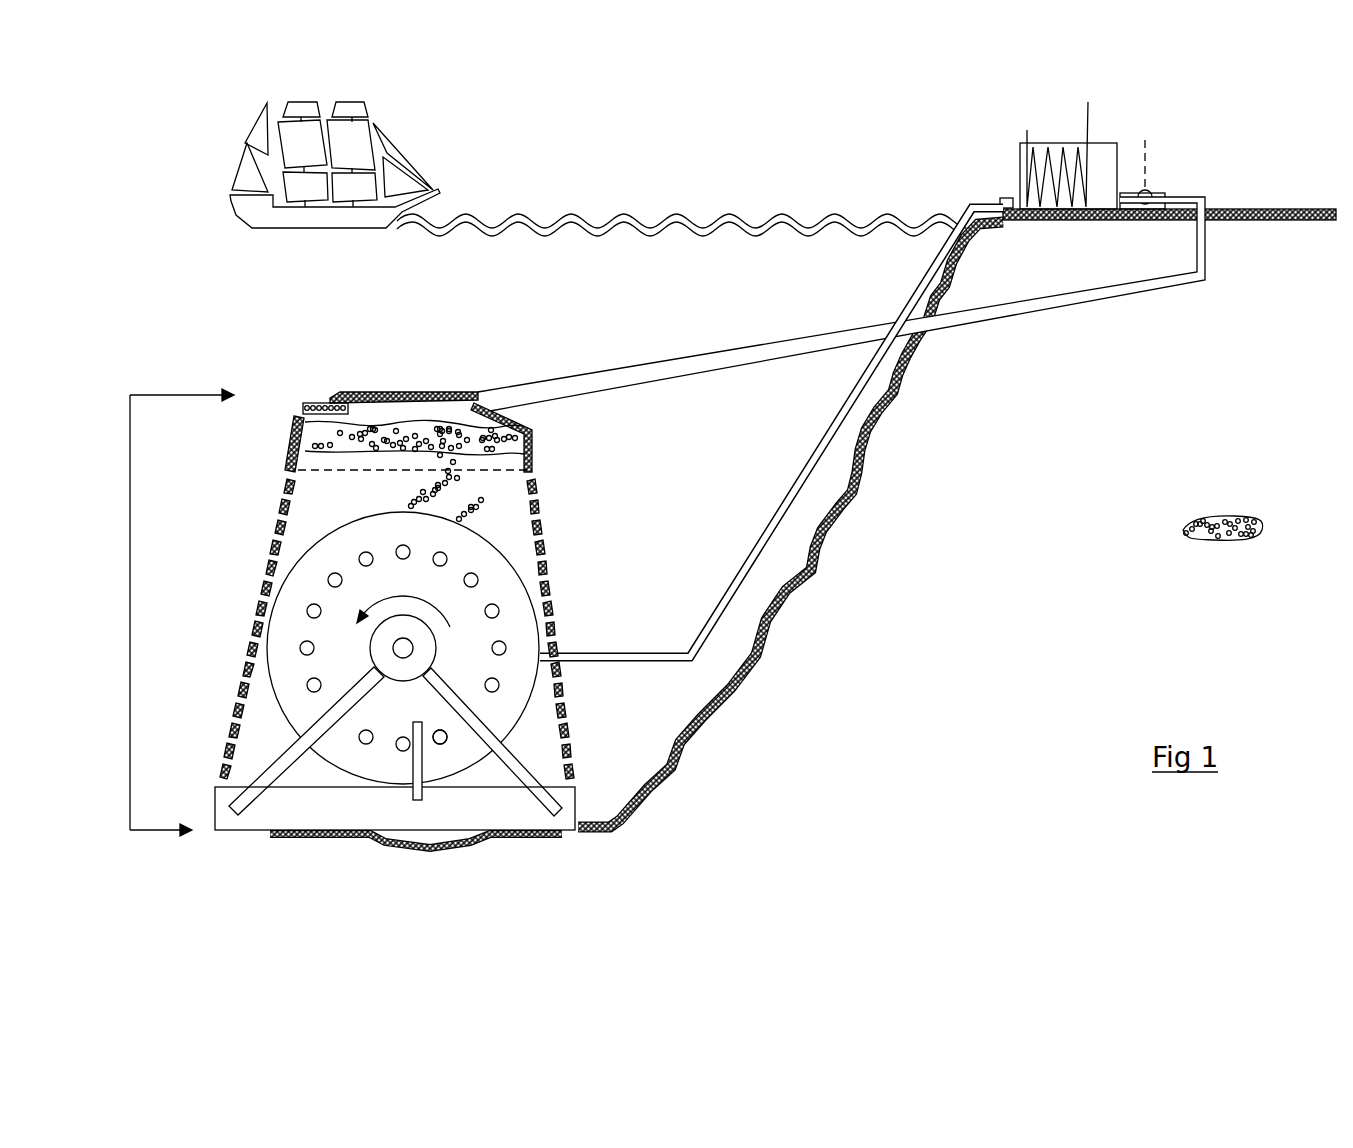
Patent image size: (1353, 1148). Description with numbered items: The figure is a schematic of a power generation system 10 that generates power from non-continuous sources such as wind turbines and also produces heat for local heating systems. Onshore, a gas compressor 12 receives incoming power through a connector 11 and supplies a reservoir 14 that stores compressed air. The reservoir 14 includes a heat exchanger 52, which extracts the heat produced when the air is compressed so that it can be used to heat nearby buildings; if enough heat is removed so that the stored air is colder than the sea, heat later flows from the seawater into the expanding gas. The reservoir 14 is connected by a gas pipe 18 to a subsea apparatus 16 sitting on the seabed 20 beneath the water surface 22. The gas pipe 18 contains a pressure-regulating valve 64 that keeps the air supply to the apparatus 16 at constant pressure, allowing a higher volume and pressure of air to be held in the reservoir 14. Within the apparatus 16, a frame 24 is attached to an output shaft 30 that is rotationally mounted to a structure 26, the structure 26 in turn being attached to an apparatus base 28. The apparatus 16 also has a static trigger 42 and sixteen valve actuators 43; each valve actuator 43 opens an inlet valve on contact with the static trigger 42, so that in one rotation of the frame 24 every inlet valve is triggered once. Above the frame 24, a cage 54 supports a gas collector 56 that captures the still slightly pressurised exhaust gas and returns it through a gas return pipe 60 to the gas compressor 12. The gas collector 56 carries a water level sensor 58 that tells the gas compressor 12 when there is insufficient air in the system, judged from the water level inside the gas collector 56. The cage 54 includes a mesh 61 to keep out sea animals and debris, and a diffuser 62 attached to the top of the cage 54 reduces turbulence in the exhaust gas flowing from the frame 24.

The power generation system 10 is at (694, 493).
The connector 11 is at (1145, 140).
The gas compressor 12 is at (1160, 209).
The reservoir 14 is at (1107, 209).
The subsea apparatus 16 is at (130, 606).
The gas pipe 18 is at (922, 337).
The seabed 20 is at (457, 843).
The water surface 22 is at (732, 212).
The frame 24 is at (532, 735).
The structure 26 is at (287, 780).
The apparatus base 28 is at (197, 805).
The output shaft 30 is at (424, 652).
The static trigger 42 is at (433, 736).
The valve actuator 43 is at (424, 754).
The heat exchanger 52 is at (1063, 207).
The cage 54 is at (568, 592).
The gas collector 56 is at (552, 459).
The water level sensor 58 is at (286, 414).
The gas return pipe 60 is at (692, 394).
The mesh 61 is at (271, 556).
The diffuser 62 is at (464, 482).
The pressure-regulating valve 64 is at (1007, 222).